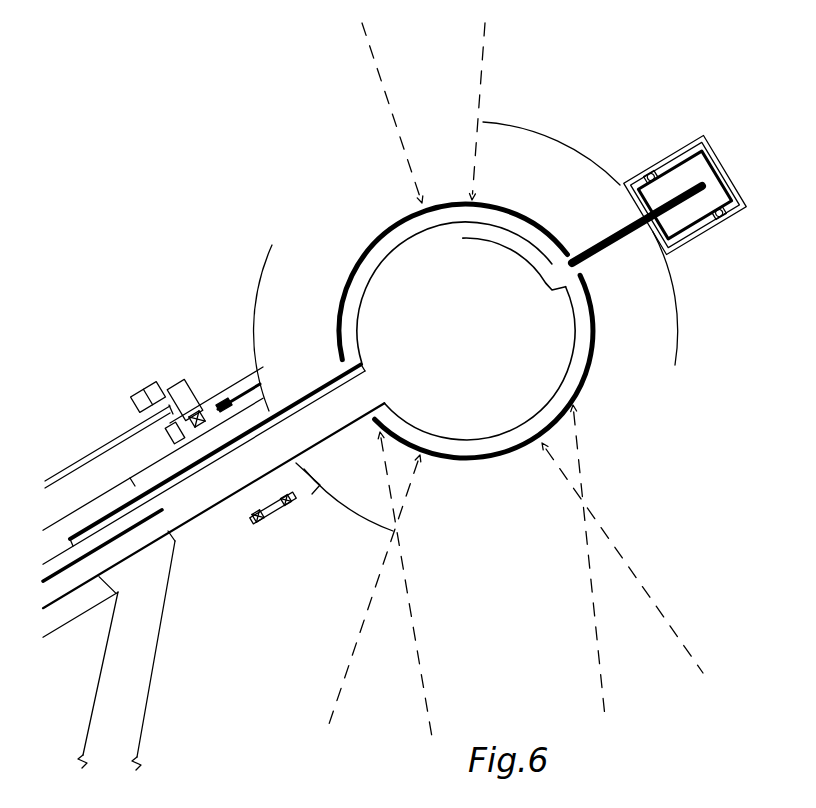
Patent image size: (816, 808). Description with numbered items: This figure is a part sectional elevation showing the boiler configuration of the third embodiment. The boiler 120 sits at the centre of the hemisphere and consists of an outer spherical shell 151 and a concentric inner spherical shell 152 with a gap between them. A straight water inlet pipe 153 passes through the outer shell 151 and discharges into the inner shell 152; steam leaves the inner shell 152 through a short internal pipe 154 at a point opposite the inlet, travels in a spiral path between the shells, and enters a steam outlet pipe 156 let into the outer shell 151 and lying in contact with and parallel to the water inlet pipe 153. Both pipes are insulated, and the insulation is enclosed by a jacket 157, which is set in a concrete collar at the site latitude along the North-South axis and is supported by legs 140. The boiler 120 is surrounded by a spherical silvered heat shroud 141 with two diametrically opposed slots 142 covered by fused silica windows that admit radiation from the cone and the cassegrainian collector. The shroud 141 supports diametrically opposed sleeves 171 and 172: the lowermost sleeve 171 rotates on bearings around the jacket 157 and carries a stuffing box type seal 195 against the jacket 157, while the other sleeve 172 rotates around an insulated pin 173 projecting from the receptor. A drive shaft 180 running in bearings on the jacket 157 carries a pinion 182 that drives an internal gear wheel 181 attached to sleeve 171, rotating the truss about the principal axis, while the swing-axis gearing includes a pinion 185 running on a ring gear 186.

The boiler 120 is at (517, 356).
The legs 140 is at (126, 655).
The heat shroud 141 is at (681, 329).
The slots 142 is at (510, 383).
The outer spherical shell 151 is at (484, 461).
The inner spherical shell 152 is at (507, 432).
The water inlet pipe 153 is at (213, 486).
The short internal pipe 154 is at (485, 243).
The steam outlet pipe 156 is at (102, 543).
The jacket 157 is at (63, 626).
The sleeve 171 is at (291, 507).
The sleeve 172 is at (673, 156).
The insulated pin 173 is at (605, 252).
The drive shaft 180 is at (95, 460).
The internal gear wheel 181 is at (187, 382).
The pinion 182 is at (221, 402).
The pinion 185 is at (146, 389).
The ring gear 186 is at (166, 436).
The stuffing box type seal 195 is at (257, 521).